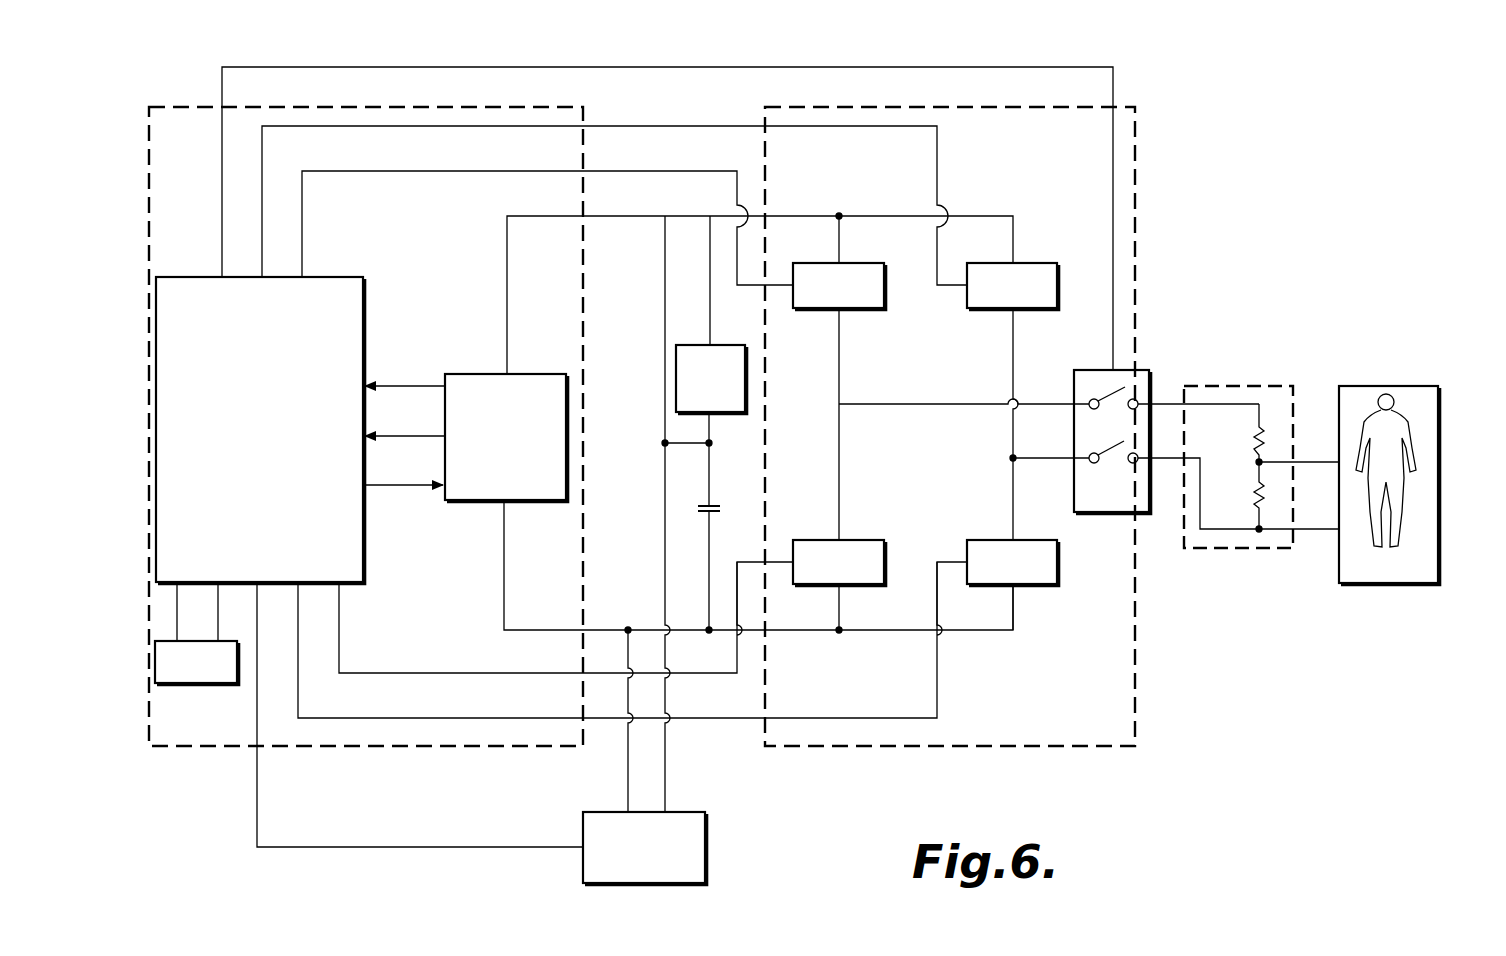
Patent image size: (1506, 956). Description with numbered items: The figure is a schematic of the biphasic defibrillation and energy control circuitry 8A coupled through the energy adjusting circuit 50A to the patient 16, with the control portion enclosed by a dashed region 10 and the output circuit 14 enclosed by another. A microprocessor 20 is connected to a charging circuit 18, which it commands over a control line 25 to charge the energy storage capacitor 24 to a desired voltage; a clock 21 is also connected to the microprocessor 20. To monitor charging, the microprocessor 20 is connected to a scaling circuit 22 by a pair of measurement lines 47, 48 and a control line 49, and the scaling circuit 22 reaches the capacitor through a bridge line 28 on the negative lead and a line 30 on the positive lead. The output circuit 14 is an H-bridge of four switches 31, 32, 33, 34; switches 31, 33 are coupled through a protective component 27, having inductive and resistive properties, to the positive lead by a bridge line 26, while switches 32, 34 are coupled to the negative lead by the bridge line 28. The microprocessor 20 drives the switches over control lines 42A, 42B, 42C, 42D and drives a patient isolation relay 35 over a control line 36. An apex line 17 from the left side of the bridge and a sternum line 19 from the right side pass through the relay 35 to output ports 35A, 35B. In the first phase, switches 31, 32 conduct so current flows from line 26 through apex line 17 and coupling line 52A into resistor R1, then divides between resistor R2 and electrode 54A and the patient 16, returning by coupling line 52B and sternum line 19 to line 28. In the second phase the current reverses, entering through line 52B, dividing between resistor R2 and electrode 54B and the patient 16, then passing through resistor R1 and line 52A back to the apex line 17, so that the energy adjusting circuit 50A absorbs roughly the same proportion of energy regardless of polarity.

The biphasic defibrillation and energy control circuitry 8A is at (1278, 228).
The control circuit 10 is at (437, 752).
The output circuit 14 is at (980, 749).
The patient 16 is at (1438, 423).
The apex line 17 is at (1043, 404).
The charging circuit 18 is at (705, 848).
The sternum line 19 is at (1044, 460).
The microprocessor 20 is at (205, 277).
The clock 21 is at (214, 685).
The scaling circuit 22 is at (490, 374).
The energy storage capacitor 24 is at (716, 500).
The control line 25 is at (522, 847).
The bridge line 26 is at (805, 216).
The protective component 27 is at (720, 345).
The bridge line 28 is at (520, 630).
The line 30 is at (527, 216).
The switch 31 is at (886, 285).
The switch 32 is at (1028, 586).
The switch 33 is at (1030, 263).
The switch 34 is at (886, 562).
The patient isolation relay 35 is at (1149, 370).
The output port 35A is at (1138, 402).
The output port 35B is at (1136, 463).
The control line 36 is at (222, 86).
The control line 42A is at (400, 171).
The control line 42B is at (368, 718).
The control line 42C is at (338, 126).
The control line 42D is at (420, 673).
The measurement line 47 is at (422, 386).
The measurement line 48 is at (422, 436).
The control line 49 is at (422, 485).
The energy adjusting circuit 50A is at (1290, 365).
The coupling line 52A is at (1238, 386).
The coupling line 52B is at (1218, 548).
The electrode 54A is at (1286, 462).
The electrode 54B is at (1282, 530).
The resistor R1 is at (1252, 441).
The resistor R2 is at (1254, 496).